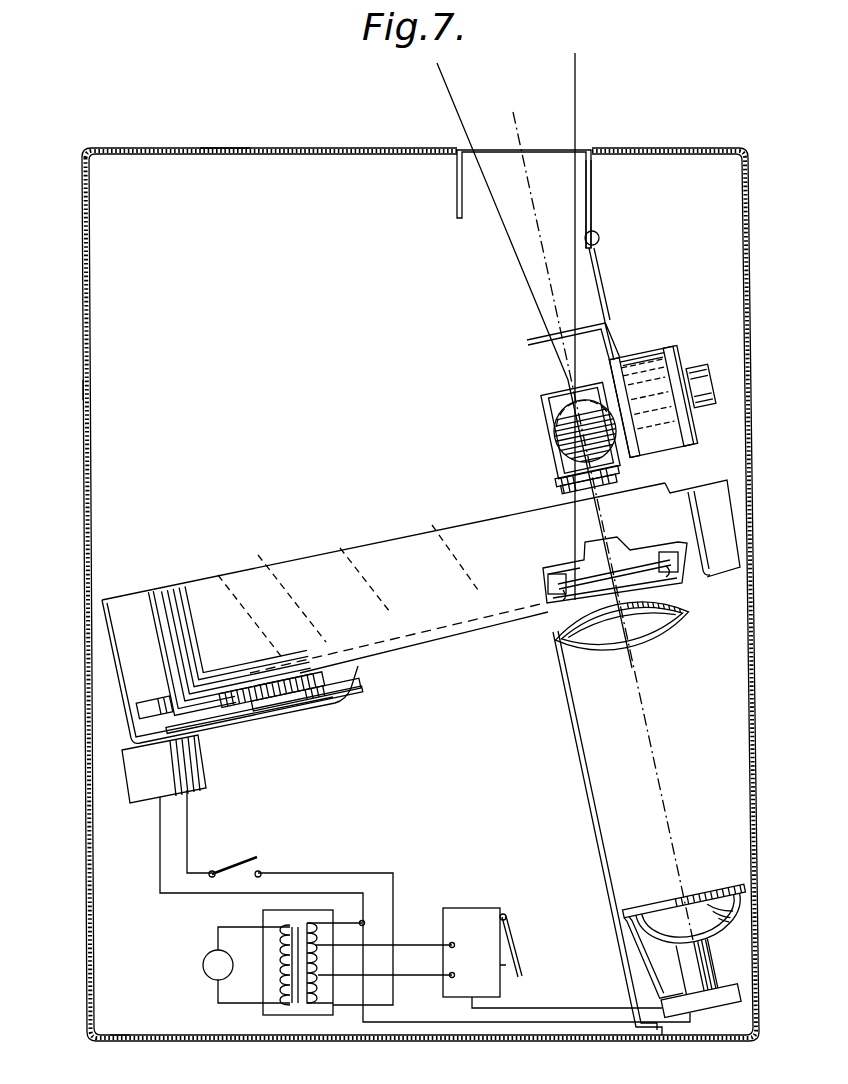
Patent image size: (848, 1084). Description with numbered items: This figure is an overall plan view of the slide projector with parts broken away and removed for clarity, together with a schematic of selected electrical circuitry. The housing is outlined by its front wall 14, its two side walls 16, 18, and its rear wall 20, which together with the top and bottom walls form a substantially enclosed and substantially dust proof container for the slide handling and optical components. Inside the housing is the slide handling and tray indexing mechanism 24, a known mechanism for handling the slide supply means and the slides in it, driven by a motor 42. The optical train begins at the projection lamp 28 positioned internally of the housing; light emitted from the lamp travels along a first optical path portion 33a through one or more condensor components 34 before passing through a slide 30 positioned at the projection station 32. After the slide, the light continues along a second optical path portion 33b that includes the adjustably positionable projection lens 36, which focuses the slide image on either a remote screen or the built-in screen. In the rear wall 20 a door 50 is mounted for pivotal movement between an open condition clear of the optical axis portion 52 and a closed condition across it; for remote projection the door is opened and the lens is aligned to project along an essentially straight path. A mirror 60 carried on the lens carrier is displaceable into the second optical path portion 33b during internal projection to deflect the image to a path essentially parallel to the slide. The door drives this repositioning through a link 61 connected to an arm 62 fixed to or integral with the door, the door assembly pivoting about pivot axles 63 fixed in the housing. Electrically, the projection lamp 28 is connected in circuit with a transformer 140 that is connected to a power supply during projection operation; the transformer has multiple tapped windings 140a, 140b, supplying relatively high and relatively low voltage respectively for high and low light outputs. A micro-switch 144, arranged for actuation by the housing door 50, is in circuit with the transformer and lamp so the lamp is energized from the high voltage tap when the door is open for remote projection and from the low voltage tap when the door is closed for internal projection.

The front wall 14 is at (124, 1034).
The side wall 16 is at (83, 378).
The side wall 18 is at (743, 258).
The rear wall 20 is at (238, 148).
The slide handling and tray indexing mechanism 24 is at (262, 565).
The projection lamp 28 is at (648, 927).
The slide 30 is at (630, 550).
The projection station 32 is at (542, 585).
The first optical path portion 33a is at (652, 736).
The second optical path portion 33b is at (598, 520).
The condensor components 34 is at (661, 627).
The projection lens 36 is at (546, 438).
The motor 42 is at (203, 770).
The door 50 is at (537, 143).
The optical axis portion 52 is at (541, 248).
The mirror 60 is at (546, 395).
The link 61 is at (612, 303).
The arm 62 is at (592, 195).
The pivot axles 63 is at (600, 237).
The transformer 140 is at (275, 1015).
The tapped winding 140a is at (322, 985).
The tapped winding 140b is at (320, 947).
The micro-switch 144 is at (466, 908).